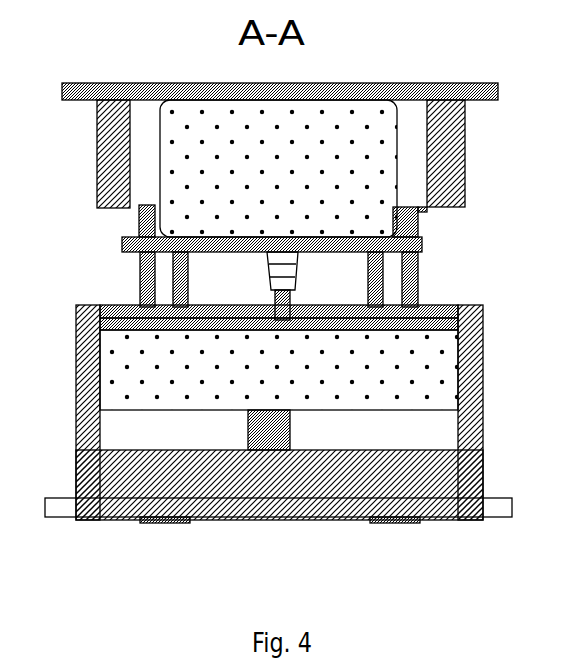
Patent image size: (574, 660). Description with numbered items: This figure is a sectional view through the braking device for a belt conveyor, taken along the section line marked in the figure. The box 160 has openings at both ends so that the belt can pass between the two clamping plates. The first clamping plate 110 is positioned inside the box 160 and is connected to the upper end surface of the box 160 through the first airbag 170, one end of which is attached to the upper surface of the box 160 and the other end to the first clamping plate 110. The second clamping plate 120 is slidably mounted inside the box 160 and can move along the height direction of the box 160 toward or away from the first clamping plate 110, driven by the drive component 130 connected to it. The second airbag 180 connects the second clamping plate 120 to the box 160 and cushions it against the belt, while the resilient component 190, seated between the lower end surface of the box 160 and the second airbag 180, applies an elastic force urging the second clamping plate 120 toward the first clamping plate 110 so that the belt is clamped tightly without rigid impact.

The first clamping plate 110 is at (160, 245).
The second clamping plate 120 is at (160, 322).
The drive component 130 is at (283, 258).
The box 160 is at (400, 84).
The first airbag 170 is at (215, 160).
The second airbag 180 is at (183, 387).
The resilient component 190 is at (290, 430).